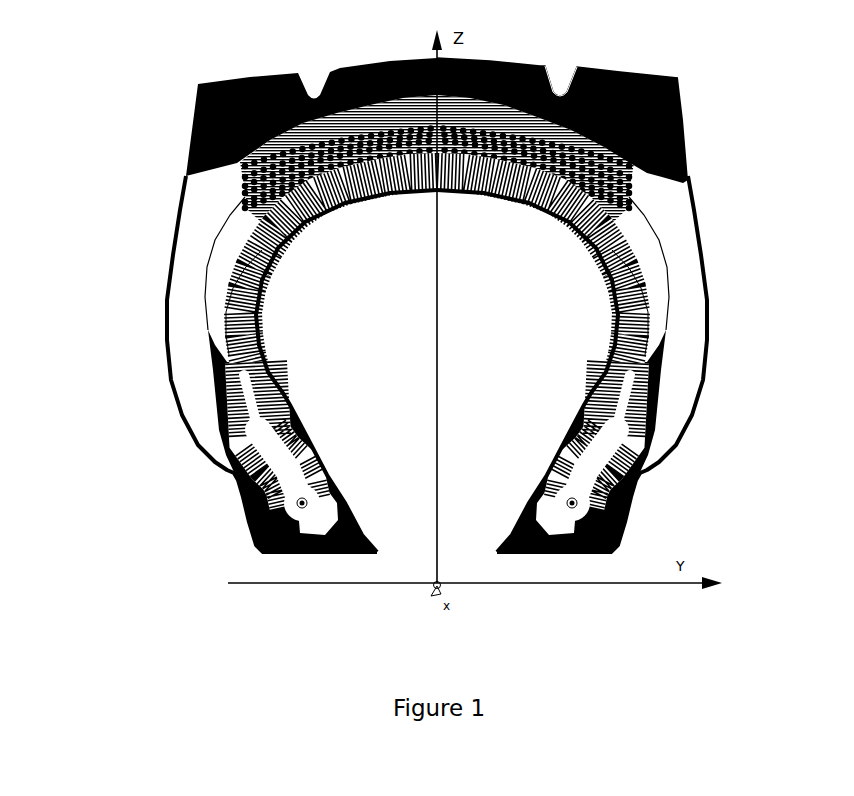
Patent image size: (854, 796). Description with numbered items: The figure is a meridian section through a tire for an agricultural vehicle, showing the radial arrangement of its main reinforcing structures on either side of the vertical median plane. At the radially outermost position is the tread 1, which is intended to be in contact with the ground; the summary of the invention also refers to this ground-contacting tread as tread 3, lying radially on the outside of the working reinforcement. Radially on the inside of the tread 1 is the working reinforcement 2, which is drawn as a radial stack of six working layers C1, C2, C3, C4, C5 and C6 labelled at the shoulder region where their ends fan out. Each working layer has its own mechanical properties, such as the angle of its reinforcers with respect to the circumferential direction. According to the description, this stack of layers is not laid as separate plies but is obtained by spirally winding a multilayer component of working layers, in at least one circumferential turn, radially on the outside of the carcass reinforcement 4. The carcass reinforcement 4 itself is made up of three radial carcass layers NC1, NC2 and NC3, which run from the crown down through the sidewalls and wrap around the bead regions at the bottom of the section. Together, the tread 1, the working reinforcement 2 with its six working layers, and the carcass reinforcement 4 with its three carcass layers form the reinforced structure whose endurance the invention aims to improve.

The tread 1 is at (200, 84).
The working reinforcement 2 is at (337, 170).
The tread 3 is at (545, 73).
The carcass reinforcement 4 is at (361, 323).
The first working layer C1 is at (252, 208).
The second working layer C2 is at (245, 202).
The third working layer C3 is at (242, 193).
The fourth working layer C4 is at (242, 186).
The fifth working layer C5 is at (245, 177).
The sixth working layer C6 is at (253, 166).
The first radial carcass layer NC1 is at (248, 333).
The second radial carcass layer NC2 is at (237, 327).
The third radial carcass layer NC3 is at (223, 315).